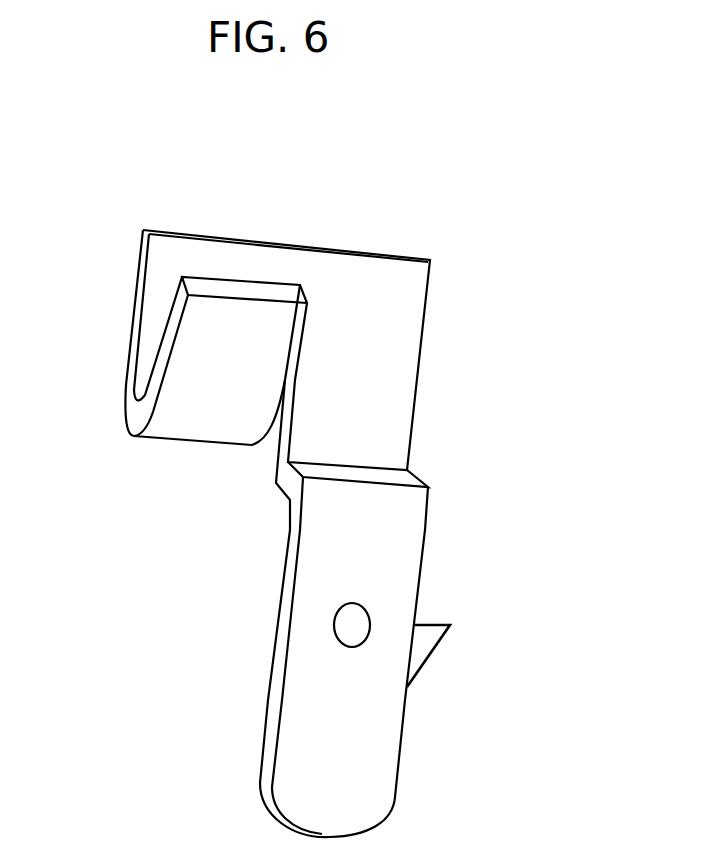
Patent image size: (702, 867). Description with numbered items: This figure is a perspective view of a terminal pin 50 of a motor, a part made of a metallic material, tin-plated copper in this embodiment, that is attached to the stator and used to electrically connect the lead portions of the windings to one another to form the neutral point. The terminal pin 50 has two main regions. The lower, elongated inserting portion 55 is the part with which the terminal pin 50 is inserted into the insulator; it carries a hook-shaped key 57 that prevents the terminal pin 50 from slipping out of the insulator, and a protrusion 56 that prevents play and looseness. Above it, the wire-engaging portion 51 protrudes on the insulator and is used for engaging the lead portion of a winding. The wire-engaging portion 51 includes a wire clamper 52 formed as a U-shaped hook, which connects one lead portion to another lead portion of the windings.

The terminal pin 50 is at (155, 217).
The wire-engaging portion 51 is at (420, 349).
The wire clamper 52 is at (165, 348).
The inserting portion 55 is at (405, 730).
The protrusion 56 is at (367, 624).
The hook-shaped key 57 is at (420, 650).